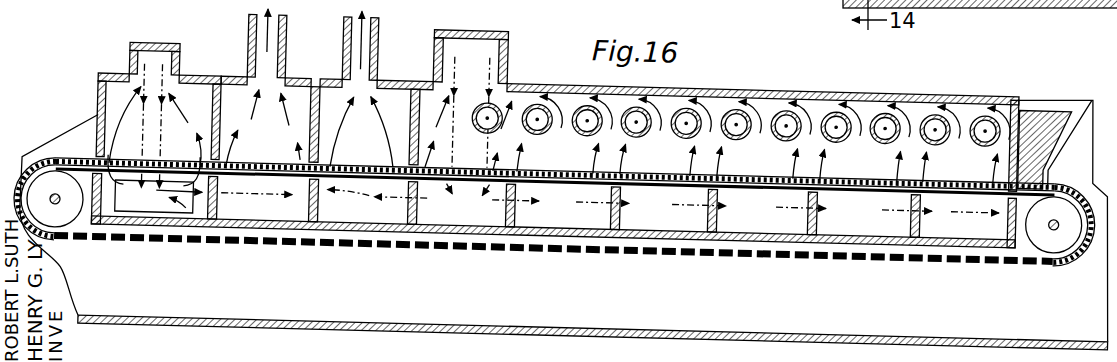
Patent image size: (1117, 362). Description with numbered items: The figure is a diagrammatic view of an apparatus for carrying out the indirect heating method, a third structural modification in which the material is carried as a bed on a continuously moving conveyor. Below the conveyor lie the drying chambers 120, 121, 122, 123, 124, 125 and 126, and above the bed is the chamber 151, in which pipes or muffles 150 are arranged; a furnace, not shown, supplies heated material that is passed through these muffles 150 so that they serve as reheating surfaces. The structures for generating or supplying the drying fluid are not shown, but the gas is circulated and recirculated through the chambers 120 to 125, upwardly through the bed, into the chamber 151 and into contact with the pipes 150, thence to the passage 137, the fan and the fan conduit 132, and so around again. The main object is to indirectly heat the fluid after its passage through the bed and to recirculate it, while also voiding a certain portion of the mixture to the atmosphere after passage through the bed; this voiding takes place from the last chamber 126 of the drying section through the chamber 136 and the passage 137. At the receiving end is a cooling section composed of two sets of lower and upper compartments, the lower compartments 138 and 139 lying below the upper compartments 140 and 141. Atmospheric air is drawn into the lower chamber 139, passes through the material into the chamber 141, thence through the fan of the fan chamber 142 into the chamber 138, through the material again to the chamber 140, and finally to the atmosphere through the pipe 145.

The chamber 120 is at (959, 208).
The chamber 121 is at (860, 211).
The chamber 122 is at (765, 210).
The chamber 123 is at (659, 208).
The chamber 124 is at (572, 212).
The chamber 125 is at (468, 208).
The chamber 126 is at (363, 206).
The fan conduit 132 is at (487, 27).
The chamber 136 is at (391, 85).
The passage 137 is at (364, 42).
The lower compartment 138 is at (274, 208).
The lower compartment 139 is at (113, 209).
The upper compartment 140 is at (233, 82).
The upper compartment 141 is at (116, 84).
The fan chamber 142 is at (157, 53).
The pipe 145 is at (272, 33).
The pipes or muffles 150 is at (528, 93).
The chamber 151 is at (818, 84).